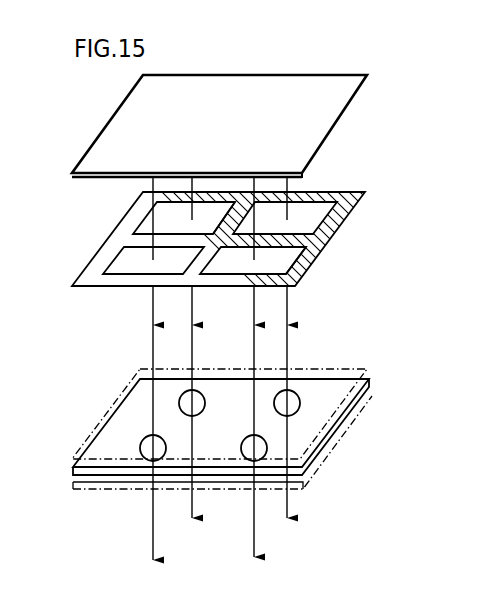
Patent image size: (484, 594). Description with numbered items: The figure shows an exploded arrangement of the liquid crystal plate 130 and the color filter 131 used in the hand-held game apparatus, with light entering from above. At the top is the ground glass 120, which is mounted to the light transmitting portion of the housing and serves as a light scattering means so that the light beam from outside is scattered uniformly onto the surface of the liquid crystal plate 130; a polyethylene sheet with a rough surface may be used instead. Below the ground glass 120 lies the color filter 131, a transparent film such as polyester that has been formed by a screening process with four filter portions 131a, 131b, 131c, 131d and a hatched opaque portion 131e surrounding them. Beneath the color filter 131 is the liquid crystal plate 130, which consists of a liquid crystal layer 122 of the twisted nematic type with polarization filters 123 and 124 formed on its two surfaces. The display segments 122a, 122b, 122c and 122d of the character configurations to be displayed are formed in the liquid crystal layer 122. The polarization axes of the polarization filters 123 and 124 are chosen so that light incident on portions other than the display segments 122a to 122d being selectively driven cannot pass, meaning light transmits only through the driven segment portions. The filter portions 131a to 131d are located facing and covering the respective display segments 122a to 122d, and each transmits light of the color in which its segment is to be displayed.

The ground glass 120 is at (368, 82).
The color filter 131 is at (358, 197).
The filter portion 131a is at (150, 222).
The filter portion 131b is at (122, 262).
The filter portion 131c is at (318, 212).
The filter portion 131d is at (282, 260).
The opaque portion 131e is at (313, 237).
The liquid crystal plate 130 is at (229, 421).
The polarization filter 123 is at (370, 368).
The liquid crystal layer 122 is at (371, 388).
The polarization filter 124 is at (352, 420).
The display segment 122a is at (204, 397).
The display segment 122b is at (146, 454).
The display segment 122c is at (297, 395).
The display segment 122d is at (267, 450).